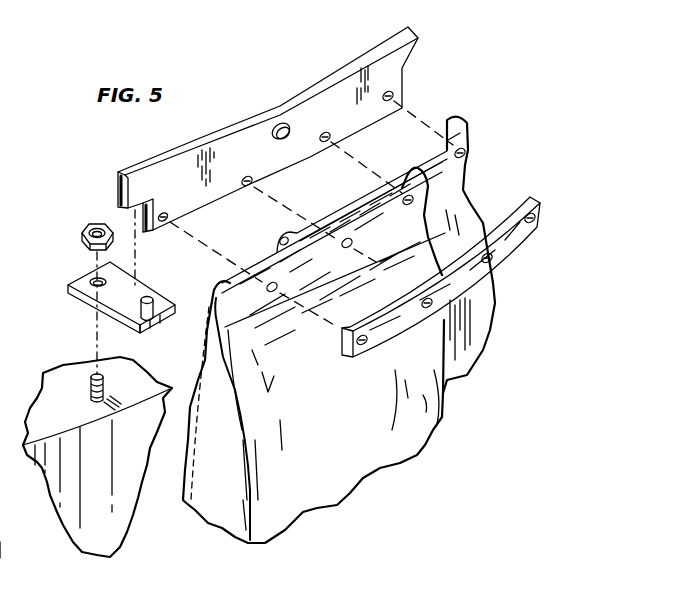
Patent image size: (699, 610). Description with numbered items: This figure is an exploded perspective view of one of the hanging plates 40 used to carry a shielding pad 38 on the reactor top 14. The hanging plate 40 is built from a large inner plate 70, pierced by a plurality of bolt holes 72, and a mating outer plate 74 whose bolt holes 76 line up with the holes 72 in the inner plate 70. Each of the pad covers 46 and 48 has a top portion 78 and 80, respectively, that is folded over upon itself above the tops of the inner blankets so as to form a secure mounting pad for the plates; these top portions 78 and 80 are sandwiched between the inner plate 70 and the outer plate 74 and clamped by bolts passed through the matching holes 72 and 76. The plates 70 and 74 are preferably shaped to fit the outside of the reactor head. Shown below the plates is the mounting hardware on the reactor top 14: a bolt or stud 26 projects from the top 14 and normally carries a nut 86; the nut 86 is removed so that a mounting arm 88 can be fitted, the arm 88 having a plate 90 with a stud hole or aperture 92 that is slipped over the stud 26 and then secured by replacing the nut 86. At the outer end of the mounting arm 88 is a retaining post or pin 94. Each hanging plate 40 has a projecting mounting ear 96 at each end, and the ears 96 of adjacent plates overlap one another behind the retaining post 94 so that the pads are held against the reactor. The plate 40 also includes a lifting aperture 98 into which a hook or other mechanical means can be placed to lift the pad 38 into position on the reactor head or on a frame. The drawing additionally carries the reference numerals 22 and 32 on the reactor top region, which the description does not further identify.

The reactor top 14 is at (71, 421).
The wall portion 22 is at (107, 493).
The bolt or stud 26 is at (89, 378).
The member 32 is at (6, 548).
The pad 38 is at (381, 465).
The hanging plate 40 is at (353, 56).
The cover 46 is at (332, 415).
The cover 48 is at (470, 248).
The inner plate 70 is at (247, 170).
The bolt hole 72 is at (284, 118).
The outer plate 74 is at (368, 345).
The bolt hole 76 is at (490, 266).
The top portion 78 is at (328, 274).
The top portion 80 is at (468, 132).
The nut 86 is at (83, 224).
The mounting arm 88 is at (97, 302).
The plate 90 is at (126, 313).
The stud hole or aperture 92 is at (88, 278).
The retaining post or pin 94 is at (152, 297).
The projecting mounting ear 96 is at (418, 42).
The lifting aperture 98 is at (289, 141).